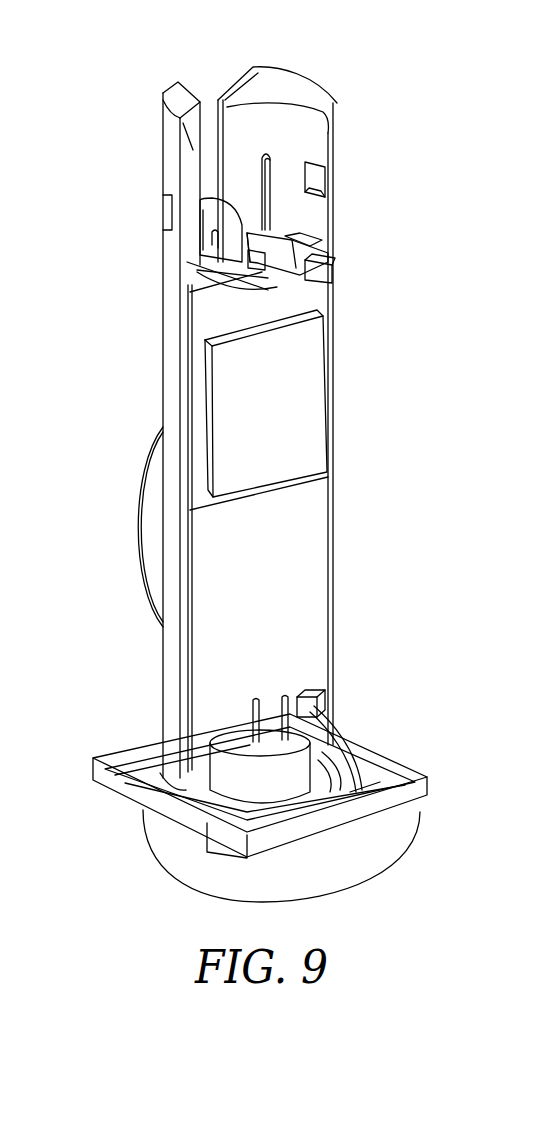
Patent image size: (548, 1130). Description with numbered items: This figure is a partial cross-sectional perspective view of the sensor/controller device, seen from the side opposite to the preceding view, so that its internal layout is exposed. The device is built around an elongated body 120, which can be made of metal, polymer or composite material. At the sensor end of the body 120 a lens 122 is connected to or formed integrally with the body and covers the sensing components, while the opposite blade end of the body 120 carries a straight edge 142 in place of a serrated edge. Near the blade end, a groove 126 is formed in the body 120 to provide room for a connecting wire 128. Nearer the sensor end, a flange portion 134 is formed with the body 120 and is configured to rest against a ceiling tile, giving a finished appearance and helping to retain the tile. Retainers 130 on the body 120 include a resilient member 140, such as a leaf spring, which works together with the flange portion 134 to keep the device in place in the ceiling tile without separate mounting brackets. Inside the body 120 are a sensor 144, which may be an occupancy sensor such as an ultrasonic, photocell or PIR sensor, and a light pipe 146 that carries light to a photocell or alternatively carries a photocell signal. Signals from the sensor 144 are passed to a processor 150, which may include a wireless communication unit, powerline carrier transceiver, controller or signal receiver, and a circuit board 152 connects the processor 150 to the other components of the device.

The body 120 is at (318, 578).
The lens 122 is at (190, 886).
The groove 126 is at (208, 100).
The connecting wire 128 is at (218, 215).
The retainers 130 is at (153, 508).
The flange portion 134 is at (415, 795).
The resilient member 140 is at (150, 527).
The straight edge 142 is at (310, 72).
The sensor 144 is at (287, 790).
The light pipe 146 is at (347, 735).
The processor 150 is at (307, 378).
The circuit board 152 is at (300, 298).